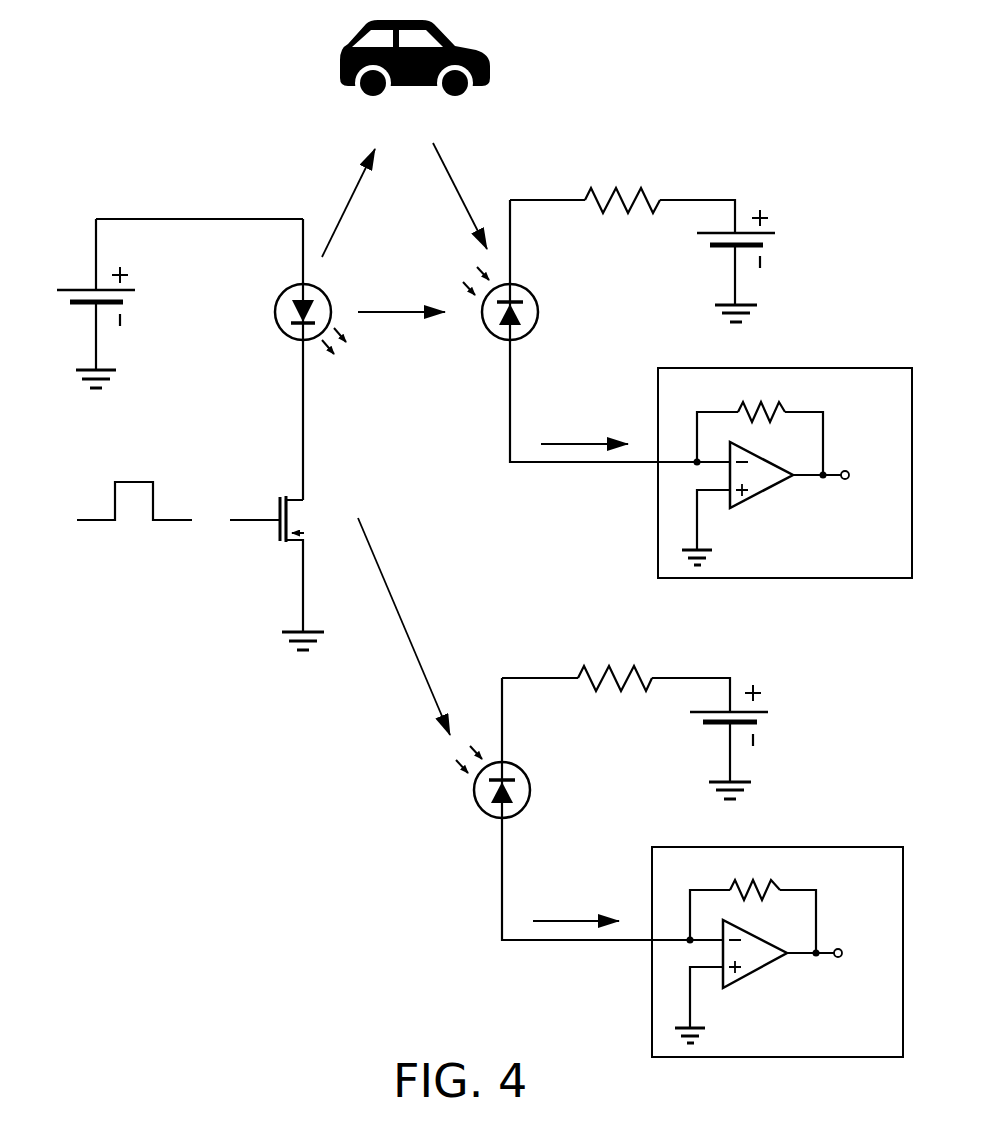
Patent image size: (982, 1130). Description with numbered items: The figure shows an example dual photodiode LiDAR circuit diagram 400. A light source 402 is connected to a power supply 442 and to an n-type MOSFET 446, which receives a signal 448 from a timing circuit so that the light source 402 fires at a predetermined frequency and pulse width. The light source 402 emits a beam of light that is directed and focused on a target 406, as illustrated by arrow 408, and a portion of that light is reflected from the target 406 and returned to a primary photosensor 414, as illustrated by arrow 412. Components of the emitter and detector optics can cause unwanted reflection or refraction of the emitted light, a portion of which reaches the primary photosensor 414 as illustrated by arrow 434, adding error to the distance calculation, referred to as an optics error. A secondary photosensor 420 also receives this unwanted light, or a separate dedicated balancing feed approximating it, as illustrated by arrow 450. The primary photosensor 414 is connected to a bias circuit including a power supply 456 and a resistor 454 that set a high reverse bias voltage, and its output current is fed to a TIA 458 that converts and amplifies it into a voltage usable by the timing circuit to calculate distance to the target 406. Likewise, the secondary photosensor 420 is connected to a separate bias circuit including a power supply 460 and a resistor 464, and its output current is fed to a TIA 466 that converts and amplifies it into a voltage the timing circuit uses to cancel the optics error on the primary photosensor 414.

The dual photodiode LiDAR circuit diagram 400 is at (138, 104).
The light source 402 is at (264, 326).
The target 406 is at (436, 134).
The arrow 408 is at (345, 206).
The arrow 412 is at (463, 200).
The primary photosensor 414 is at (592, 326).
The secondary photosensor 420 is at (584, 804).
The arrow 434 is at (387, 313).
The power supply 442 is at (54, 306).
The n-type MOSFET 446 is at (274, 482).
The signal 448 is at (152, 551).
The arrow 450 is at (413, 632).
The resistor 454 is at (643, 176).
The power supply 456 is at (693, 247).
The TIA 458 is at (895, 570).
The power supply 460 is at (687, 724).
The resistor 464 is at (637, 654).
The TIA 466 is at (888, 1047).